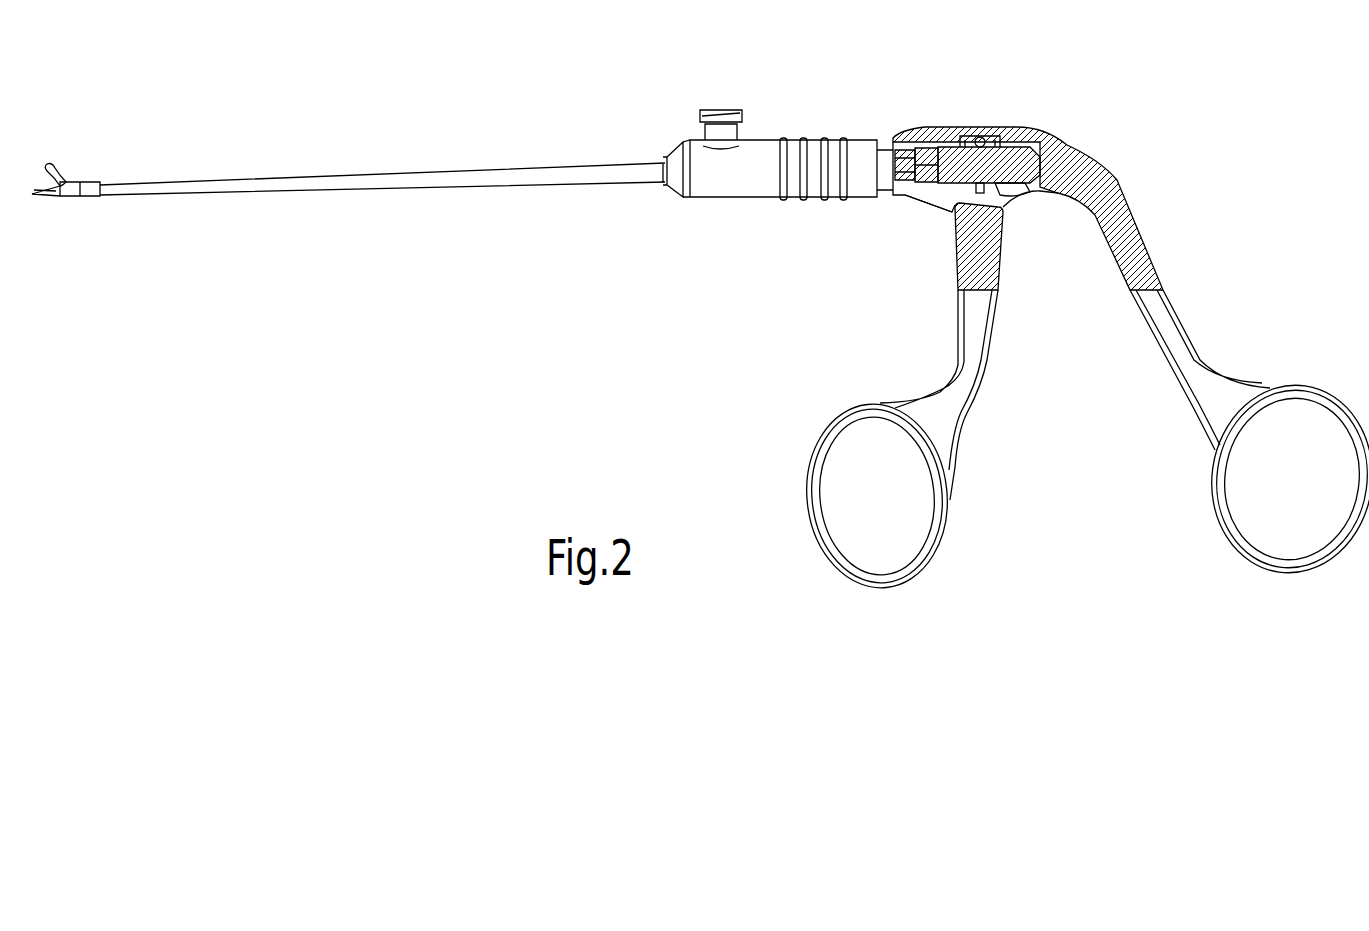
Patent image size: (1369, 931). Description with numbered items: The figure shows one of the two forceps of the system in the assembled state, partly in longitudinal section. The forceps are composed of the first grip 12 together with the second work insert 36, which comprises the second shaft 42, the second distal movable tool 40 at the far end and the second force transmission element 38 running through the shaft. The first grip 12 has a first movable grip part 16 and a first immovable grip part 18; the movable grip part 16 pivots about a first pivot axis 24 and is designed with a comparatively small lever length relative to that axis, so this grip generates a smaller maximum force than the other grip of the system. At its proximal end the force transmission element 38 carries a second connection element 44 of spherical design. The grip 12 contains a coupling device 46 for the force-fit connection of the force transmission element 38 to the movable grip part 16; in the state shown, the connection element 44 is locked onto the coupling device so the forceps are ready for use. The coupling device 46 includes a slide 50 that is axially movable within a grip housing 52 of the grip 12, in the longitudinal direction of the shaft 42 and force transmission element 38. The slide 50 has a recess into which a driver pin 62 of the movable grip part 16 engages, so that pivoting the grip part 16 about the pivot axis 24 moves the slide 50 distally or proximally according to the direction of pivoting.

The first grip 12 is at (1172, 173).
The first movable grip part 16 is at (952, 405).
The first immovable grip part 18 is at (1140, 258).
The first pivot axis 24 is at (980, 145).
The second work insert 36 is at (91, 134).
The second force transmission element 38 is at (897, 145).
The second distal movable tool 40 is at (49, 163).
The second shaft 42 is at (250, 185).
The second connection element 44 is at (922, 145).
The coupling device 46 is at (930, 198).
The slide 50 is at (1007, 187).
The grip housing 52 is at (1023, 145).
The driver pin 62 is at (960, 213).